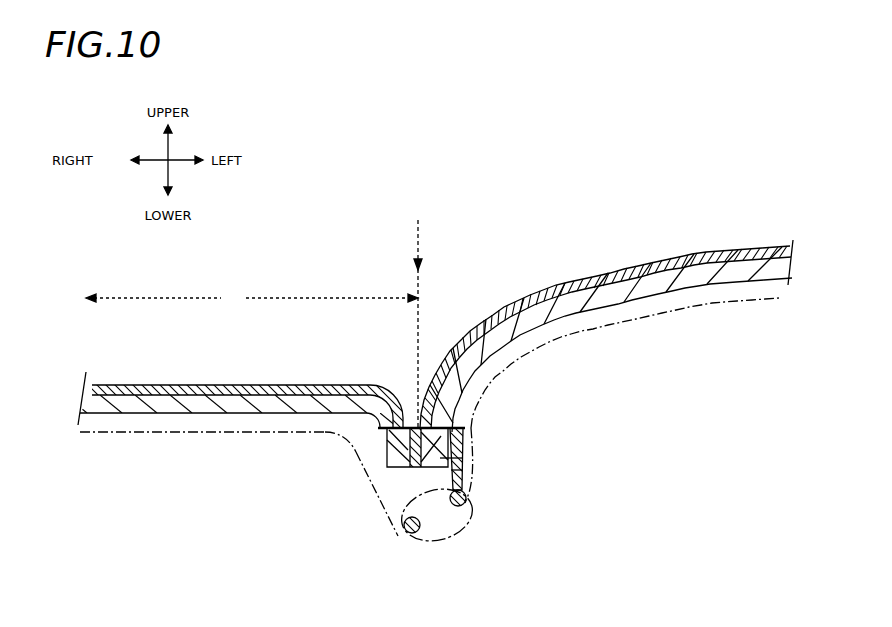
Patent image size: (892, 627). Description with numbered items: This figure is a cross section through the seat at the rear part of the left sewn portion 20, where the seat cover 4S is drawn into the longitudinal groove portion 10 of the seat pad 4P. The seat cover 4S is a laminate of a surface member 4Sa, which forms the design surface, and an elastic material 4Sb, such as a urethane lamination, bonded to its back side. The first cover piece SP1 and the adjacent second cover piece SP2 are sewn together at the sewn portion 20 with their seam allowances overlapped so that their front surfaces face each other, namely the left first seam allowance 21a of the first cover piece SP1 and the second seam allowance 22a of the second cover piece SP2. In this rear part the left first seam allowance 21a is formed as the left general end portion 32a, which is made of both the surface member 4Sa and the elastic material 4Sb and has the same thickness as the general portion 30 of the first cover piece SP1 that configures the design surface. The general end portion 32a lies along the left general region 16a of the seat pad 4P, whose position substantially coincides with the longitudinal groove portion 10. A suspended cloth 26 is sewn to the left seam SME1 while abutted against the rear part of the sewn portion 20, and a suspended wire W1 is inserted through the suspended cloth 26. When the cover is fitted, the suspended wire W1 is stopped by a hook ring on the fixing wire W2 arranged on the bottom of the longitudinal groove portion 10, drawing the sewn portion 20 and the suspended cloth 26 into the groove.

The seat cover 4S is at (709, 167).
The surface member 4Sa is at (167, 384).
The elastic material 4Sb is at (204, 411).
The seat pad 4P is at (627, 302).
The first cover piece SP1 is at (303, 378).
The second cover piece SP2 is at (708, 292).
The left seam SME1 is at (362, 452).
The general region 16a is at (418, 310).
The general portion 30 is at (252, 297).
The longitudinal groove portion 10 is at (374, 490).
The sewn portion 20 is at (597, 410).
The left first seam allowance 21a is at (465, 430).
The left general end portion 32a is at (484, 440).
The second seam allowance 22a is at (462, 458).
The suspended cloth 26 is at (466, 479).
The suspended wire W1 is at (465, 533).
The fixing wire W2 is at (417, 540).